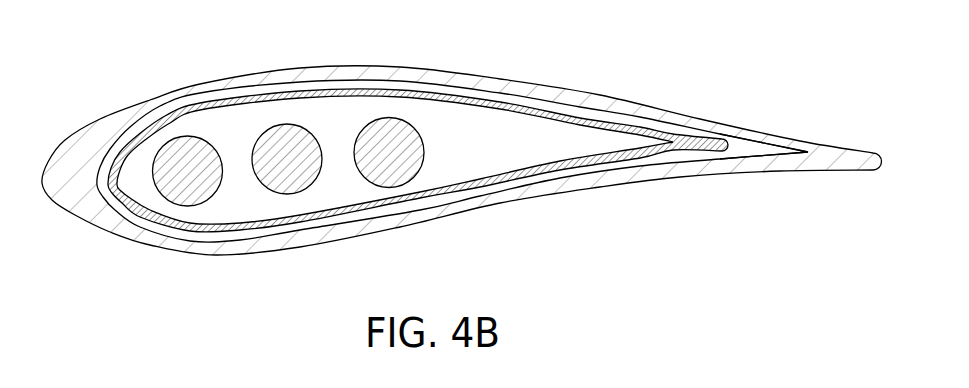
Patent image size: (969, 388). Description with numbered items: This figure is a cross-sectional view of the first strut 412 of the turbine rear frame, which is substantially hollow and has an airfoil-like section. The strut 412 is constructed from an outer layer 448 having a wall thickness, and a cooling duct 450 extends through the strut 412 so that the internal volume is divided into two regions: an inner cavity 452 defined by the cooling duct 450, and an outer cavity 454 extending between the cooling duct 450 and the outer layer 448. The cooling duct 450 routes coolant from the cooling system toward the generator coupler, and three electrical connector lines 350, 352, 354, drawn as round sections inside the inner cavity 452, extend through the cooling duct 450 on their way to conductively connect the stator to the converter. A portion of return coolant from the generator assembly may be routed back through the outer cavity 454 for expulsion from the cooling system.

The first strut 412 is at (98, 220).
The outer layer 448 is at (247, 243).
The cooling duct 450 is at (583, 117).
The inner cavity 452 is at (449, 112).
The outer cavity 454 is at (749, 150).
The electrical connector line 350 is at (388, 130).
The electrical connector line 352 is at (287, 138).
The electrical connector line 354 is at (187, 150).